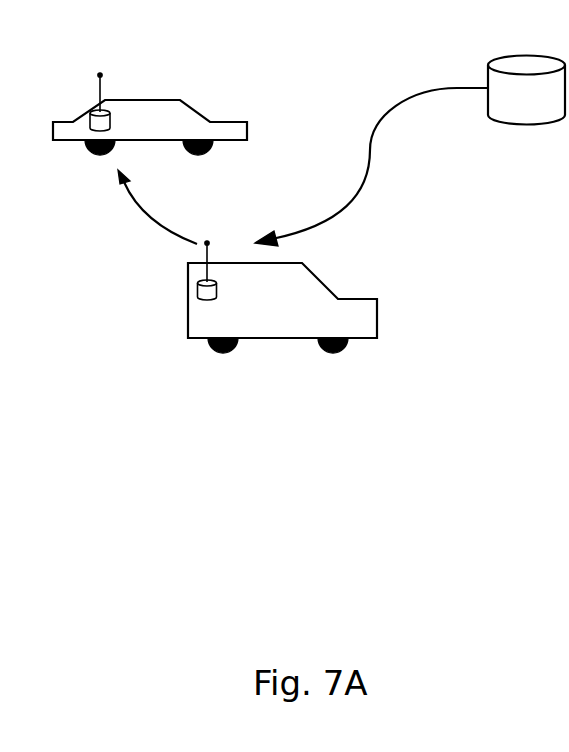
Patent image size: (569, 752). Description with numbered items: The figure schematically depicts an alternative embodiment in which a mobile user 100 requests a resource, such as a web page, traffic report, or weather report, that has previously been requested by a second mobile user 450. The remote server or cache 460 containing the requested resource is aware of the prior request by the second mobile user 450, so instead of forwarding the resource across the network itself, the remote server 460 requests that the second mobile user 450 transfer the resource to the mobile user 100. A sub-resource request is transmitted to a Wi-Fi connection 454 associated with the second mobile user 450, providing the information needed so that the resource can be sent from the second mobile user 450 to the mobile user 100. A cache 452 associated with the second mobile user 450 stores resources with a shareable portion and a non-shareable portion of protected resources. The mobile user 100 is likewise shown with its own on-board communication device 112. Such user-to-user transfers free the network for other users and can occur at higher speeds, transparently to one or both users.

The mobile user 100 is at (199, 94).
The vehicle communication device 112 is at (110, 122).
The second mobile user 450 is at (386, 312).
The cache 452 is at (198, 290).
The Wi-Fi connection 454 is at (210, 253).
The remote server or cache 460 is at (544, 103).